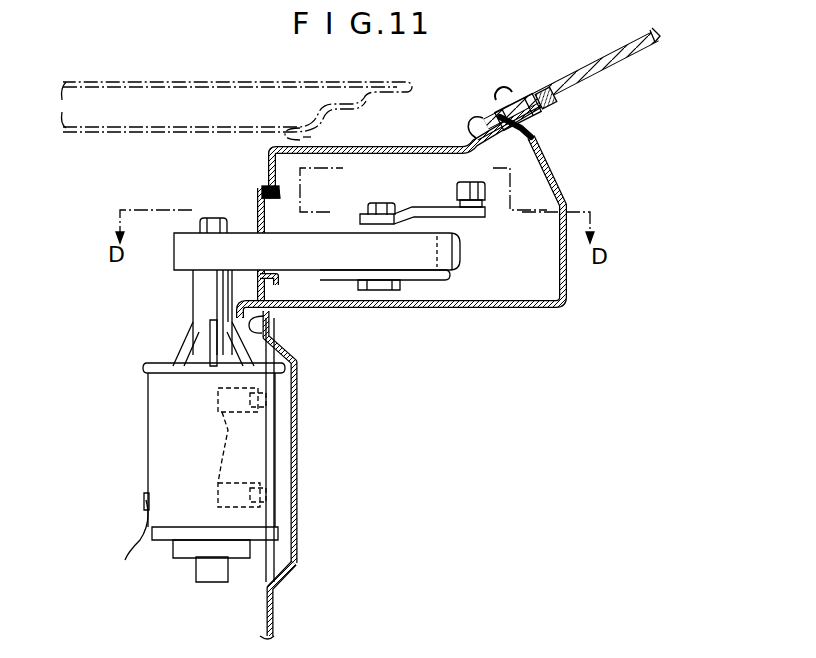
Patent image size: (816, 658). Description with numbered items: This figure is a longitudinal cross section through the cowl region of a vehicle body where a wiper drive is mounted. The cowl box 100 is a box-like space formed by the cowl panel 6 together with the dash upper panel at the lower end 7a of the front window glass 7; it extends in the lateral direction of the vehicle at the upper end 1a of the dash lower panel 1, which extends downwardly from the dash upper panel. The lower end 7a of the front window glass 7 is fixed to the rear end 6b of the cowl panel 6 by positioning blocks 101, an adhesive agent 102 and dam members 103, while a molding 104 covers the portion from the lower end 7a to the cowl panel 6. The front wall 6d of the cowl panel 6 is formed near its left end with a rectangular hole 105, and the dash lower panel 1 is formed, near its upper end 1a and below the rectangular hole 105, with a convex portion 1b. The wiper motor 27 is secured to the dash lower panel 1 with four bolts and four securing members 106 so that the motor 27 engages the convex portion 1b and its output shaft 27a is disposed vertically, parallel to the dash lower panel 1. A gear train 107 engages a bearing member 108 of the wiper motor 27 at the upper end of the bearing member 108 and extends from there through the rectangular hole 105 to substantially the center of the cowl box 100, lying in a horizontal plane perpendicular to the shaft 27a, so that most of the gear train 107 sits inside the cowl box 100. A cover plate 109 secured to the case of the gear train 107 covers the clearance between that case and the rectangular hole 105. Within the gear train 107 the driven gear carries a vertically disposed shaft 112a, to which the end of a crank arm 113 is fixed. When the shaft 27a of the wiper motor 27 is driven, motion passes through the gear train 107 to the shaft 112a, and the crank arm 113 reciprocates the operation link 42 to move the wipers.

The dash lower panel 1 is at (276, 619).
The upper end of the dash lower panel 1a is at (268, 321).
The convex portion 1b is at (297, 476).
The cowl panel 6 is at (401, 208).
The rear end of the cowl panel 6b is at (572, 108).
The front wall of the cowl panel 6d is at (266, 162).
The front window glass 7 is at (611, 52).
The lower end of the front window glass 7a is at (524, 100).
The wiper motor 27 is at (150, 445).
The output shaft 27a is at (208, 220).
The operation link 42 is at (474, 177).
The cowl box 100 is at (388, 147).
The positioning blocks 101 is at (535, 132).
The adhesive agent 102 is at (553, 124).
The dam members 103 is at (575, 98).
The molding 104 is at (498, 108).
The rectangular hole 105 is at (260, 198).
The securing members 106 is at (221, 445).
The gear train 107 is at (312, 260).
The bearing member 108 is at (198, 292).
The cover plate 109 is at (260, 182).
The shaft of the driven gear 112a is at (445, 226).
The crank arm 113 is at (420, 213).